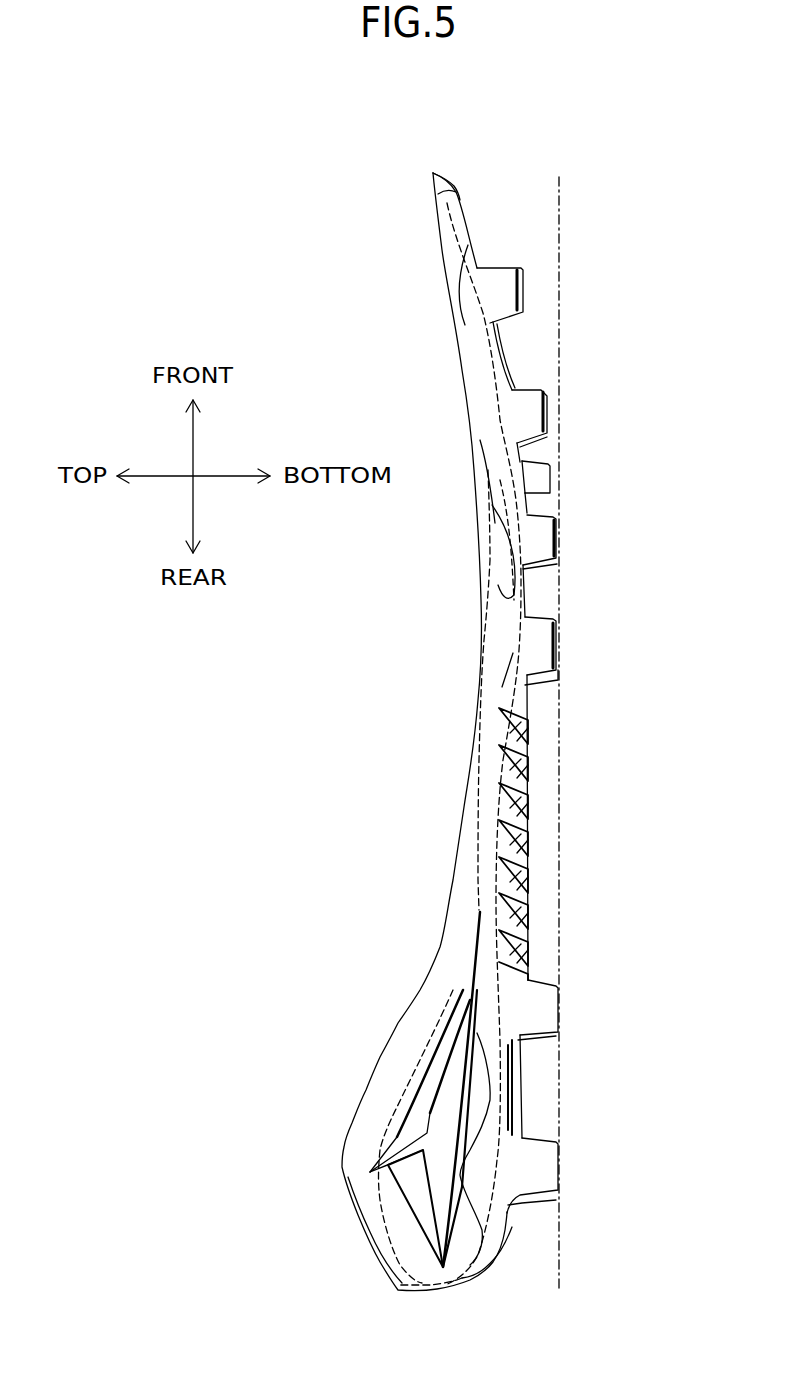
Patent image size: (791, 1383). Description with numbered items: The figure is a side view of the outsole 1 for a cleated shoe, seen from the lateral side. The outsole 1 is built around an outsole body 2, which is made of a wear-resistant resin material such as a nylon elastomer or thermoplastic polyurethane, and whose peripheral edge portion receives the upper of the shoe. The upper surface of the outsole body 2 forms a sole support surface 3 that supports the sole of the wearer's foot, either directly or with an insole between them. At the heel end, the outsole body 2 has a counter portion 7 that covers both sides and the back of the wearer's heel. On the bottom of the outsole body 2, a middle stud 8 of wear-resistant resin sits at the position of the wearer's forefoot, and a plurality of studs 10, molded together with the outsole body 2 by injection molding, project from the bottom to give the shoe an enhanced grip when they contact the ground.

The outsole 1 is at (343, 190).
The outsole body 2 is at (442, 221).
The sole support surface 3 is at (520, 523).
The counter portion 7 is at (342, 1153).
The middle stud 8 is at (547, 478).
The studs 10 is at (510, 288).